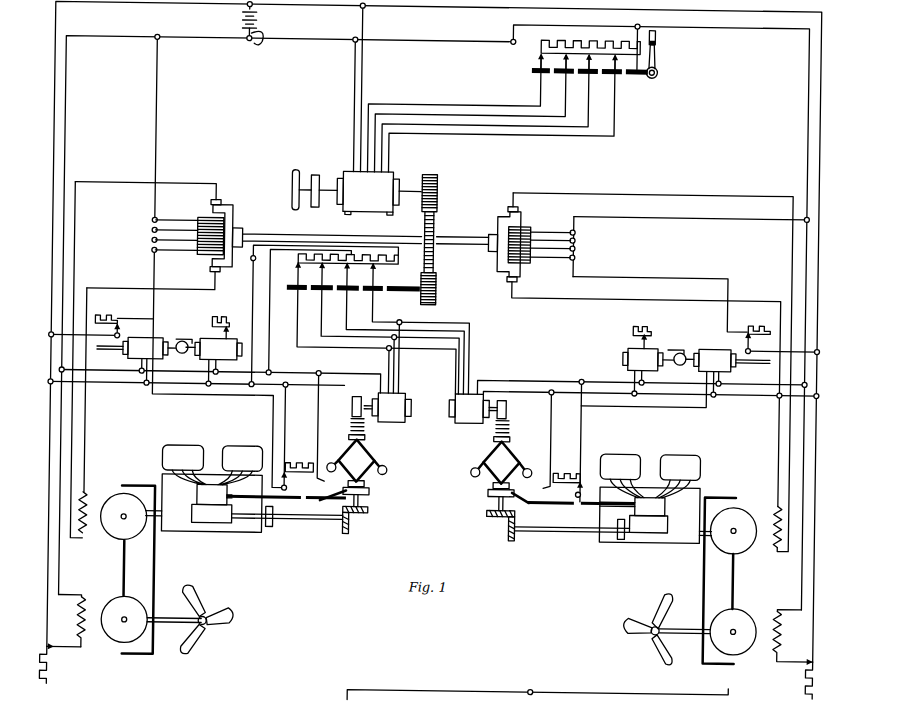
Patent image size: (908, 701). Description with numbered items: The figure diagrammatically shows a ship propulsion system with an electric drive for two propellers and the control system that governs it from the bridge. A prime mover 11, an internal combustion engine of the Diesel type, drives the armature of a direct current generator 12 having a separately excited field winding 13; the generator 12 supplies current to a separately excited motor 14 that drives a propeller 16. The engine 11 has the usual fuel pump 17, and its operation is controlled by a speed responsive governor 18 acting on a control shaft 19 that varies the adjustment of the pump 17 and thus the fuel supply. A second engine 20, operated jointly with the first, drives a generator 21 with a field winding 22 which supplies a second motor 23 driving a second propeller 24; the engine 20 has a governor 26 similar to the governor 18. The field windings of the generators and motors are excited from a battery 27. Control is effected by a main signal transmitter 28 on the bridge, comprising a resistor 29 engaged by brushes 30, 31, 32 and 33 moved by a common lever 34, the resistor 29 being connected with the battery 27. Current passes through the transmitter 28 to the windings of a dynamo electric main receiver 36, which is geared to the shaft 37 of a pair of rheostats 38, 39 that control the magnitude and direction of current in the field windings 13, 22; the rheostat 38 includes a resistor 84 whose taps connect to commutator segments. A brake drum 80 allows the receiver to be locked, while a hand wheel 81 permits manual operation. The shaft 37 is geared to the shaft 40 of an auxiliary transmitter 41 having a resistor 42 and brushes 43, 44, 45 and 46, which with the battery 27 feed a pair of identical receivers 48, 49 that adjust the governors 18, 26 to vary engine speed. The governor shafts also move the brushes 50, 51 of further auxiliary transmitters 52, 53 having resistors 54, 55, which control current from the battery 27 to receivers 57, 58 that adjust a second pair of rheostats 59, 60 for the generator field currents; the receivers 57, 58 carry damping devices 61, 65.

The prime mover 11 is at (226, 535).
The direct current generator 12 is at (116, 497).
The field winding 13 is at (88, 542).
The separately excited motor 14 is at (114, 643).
The propeller 16 is at (202, 648).
The fuel pump 17 is at (198, 528).
The speed responsive governor 18 is at (372, 460).
The control shaft 19 is at (300, 504).
The second engine 20 is at (616, 537).
The generator 21 is at (746, 510).
The field winding 22 is at (776, 548).
The second separately excited motor 23 is at (741, 652).
The second propeller 24 is at (654, 650).
The governor 26 is at (484, 457).
The battery 27 is at (258, 40).
The main signal transmitter 28 is at (607, 59).
The resistor 29 is at (626, 50).
The brush 30 is at (535, 60).
The brush 31 is at (560, 60).
The brush 32 is at (584, 60).
The brush 33 is at (610, 60).
The handle or lever 34 is at (652, 36).
The main receiver 36 is at (394, 174).
The shaft 37 is at (462, 232).
The rheostat 38 is at (232, 212).
The rheostat 39 is at (505, 212).
The shaft 40 is at (419, 288).
The auxiliary transmitter 41 is at (335, 283).
The resistor 42 is at (386, 287).
The brush 43 is at (291, 277).
The brush 44 is at (318, 277).
The brush 45 is at (344, 277).
The brush 46 is at (371, 277).
The receiver 48 is at (392, 425).
The receiver 49 is at (470, 425).
The brush 50 is at (284, 488).
The brush 51 is at (578, 489).
The auxiliary transmitter 52 is at (299, 458).
The auxiliary transmitter 53 is at (566, 466).
The resistor 54 is at (330, 488).
The resistor 55 is at (545, 480).
The receiver 57 is at (155, 341).
The receiver 58 is at (716, 346).
The rheostat 59 is at (118, 324).
The rheostat 60 is at (760, 322).
The damping device 61 is at (205, 341).
The damping device 65 is at (627, 347).
The brake drum 80 is at (314, 176).
The hand wheel 81 is at (293, 171).
The resistor 84 is at (150, 236).